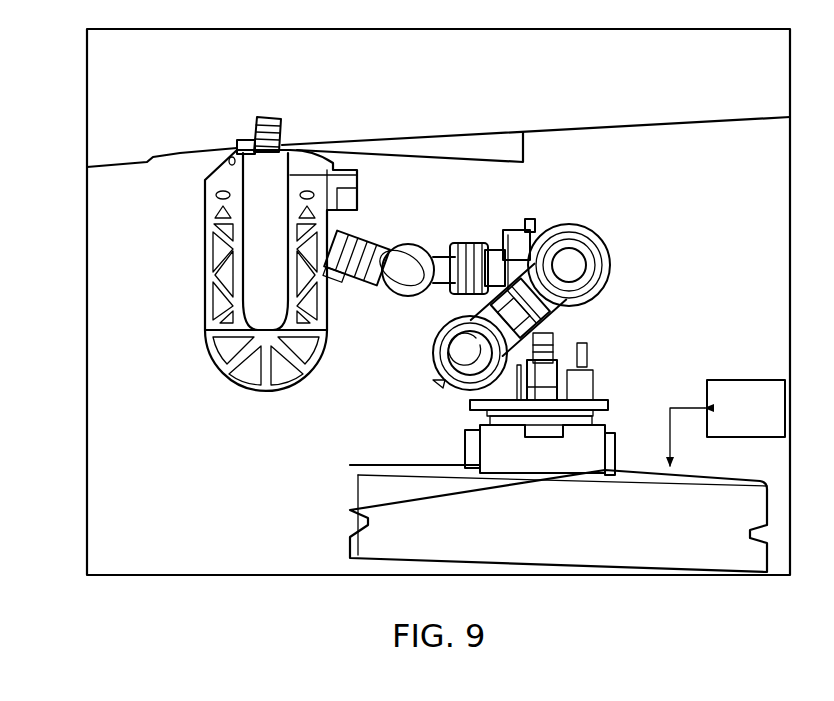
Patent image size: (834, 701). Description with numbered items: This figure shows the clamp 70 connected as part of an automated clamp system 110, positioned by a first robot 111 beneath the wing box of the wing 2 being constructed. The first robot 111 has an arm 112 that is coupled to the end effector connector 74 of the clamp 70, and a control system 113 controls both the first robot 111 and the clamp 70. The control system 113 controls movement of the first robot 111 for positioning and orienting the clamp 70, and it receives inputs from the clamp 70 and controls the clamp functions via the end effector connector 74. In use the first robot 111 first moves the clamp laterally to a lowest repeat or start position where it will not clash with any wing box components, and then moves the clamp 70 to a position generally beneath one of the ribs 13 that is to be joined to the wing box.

The wing 2 is at (471, 100).
The rib 13 is at (232, 118).
The clamp 70 is at (206, 273).
The end effector connector 74 is at (353, 235).
The automated clamp system 110 is at (268, 462).
The first robot 111 is at (606, 311).
The arm 112 is at (531, 221).
The control system 113 is at (766, 421).